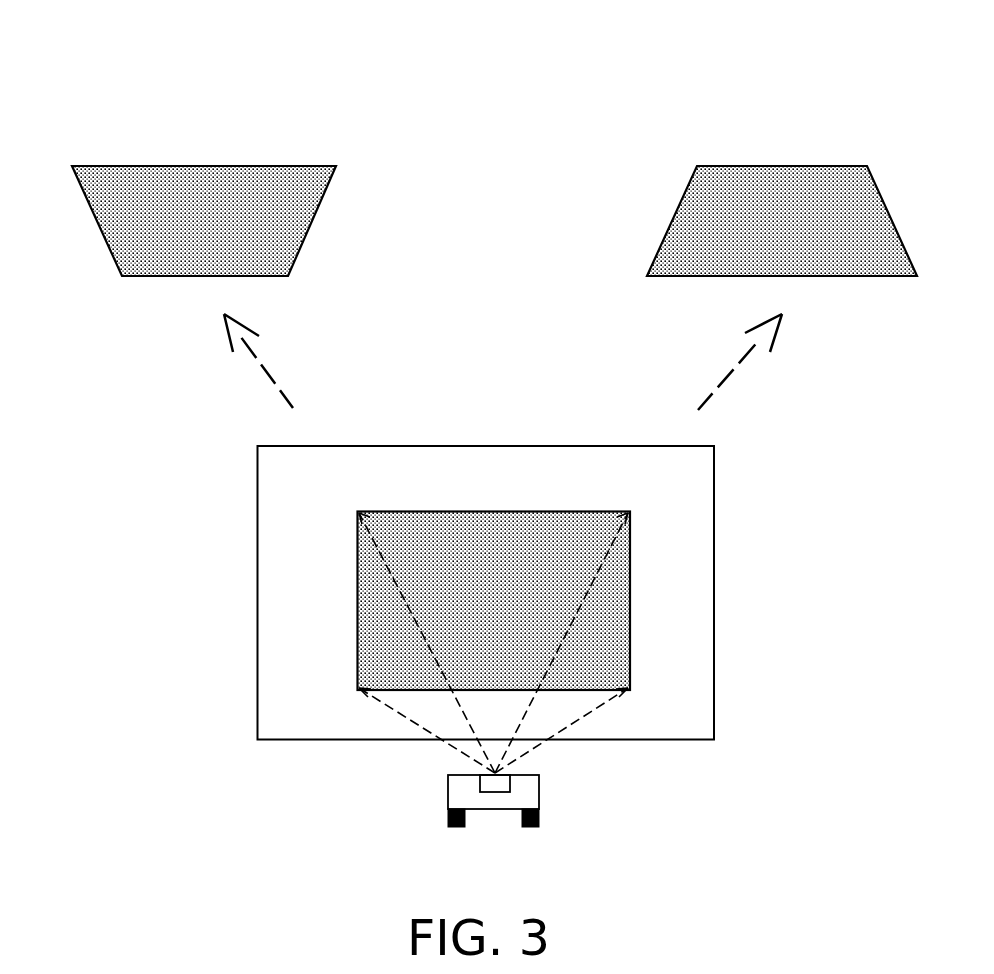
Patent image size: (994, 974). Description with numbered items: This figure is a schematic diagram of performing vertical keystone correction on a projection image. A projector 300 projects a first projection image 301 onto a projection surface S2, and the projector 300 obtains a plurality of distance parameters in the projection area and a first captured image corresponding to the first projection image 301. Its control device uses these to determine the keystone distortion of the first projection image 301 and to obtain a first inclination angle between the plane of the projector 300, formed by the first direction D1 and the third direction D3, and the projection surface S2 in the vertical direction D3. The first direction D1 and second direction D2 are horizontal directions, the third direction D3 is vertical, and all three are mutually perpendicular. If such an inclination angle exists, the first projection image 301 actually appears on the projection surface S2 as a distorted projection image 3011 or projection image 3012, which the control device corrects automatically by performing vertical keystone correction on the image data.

The projector 300 is at (542, 793).
The first projection image 301 is at (542, 510).
The projection image 3011 is at (273, 153).
The projection image 3012 is at (828, 153).
The projection surface S2 is at (689, 514).
The first direction D1 is at (80, 112).
The second direction D2 is at (63, 105).
The third direction D3 is at (70, 102).